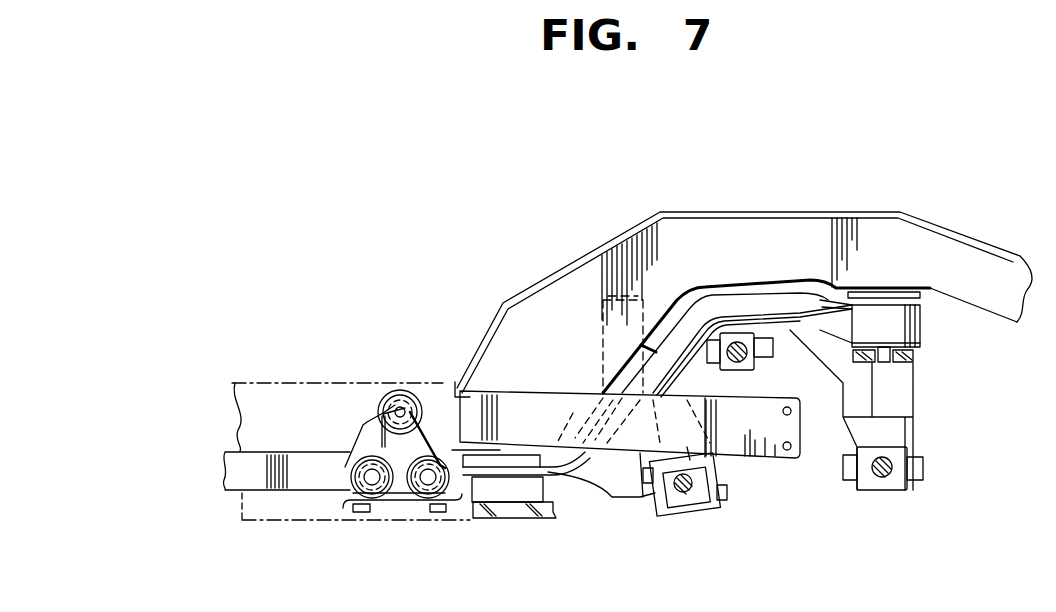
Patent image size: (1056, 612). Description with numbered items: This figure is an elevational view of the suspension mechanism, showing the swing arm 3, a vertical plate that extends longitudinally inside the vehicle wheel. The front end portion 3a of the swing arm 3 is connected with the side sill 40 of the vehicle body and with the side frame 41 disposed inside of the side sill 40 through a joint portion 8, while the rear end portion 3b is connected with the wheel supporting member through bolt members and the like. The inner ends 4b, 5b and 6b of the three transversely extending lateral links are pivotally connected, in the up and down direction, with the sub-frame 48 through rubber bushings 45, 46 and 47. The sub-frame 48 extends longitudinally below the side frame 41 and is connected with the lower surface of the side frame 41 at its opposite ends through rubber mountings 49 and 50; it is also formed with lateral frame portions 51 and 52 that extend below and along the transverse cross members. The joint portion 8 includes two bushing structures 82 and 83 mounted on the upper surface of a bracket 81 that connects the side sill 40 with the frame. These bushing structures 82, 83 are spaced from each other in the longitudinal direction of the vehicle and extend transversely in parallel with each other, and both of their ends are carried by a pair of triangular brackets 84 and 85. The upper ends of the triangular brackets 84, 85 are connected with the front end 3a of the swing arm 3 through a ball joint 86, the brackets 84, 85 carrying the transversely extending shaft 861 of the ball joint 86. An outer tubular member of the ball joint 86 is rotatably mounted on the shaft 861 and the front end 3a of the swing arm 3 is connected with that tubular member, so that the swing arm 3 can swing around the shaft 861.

The swing arm 3 is at (537, 398).
The front end portion 3a is at (457, 392).
The rear end portion 3b is at (768, 460).
The inner end 4b is at (736, 343).
The inner end 5b is at (687, 492).
The inner end 6b is at (882, 478).
The joint portion 8 is at (365, 442).
The side sill 40 is at (256, 382).
The side frame 41 is at (258, 492).
The rubber bushing 45 is at (753, 323).
The rubber bushing 46 is at (662, 510).
The rubber bushing 47 is at (870, 485).
The sub-frame 48 is at (703, 307).
The rubber mounting 49 is at (497, 525).
The rubber mounting 50 is at (938, 326).
The lateral frame portion 51 is at (583, 323).
The lateral frame portion 52 is at (917, 395).
The bracket 81 is at (372, 516).
The bushing structure 82 is at (343, 482).
The bushing structure 83 is at (453, 513).
The triangular bracket 84 is at (352, 437).
The triangular bracket 85 is at (355, 430).
The ball joint 86 is at (387, 390).
The shaft 861 is at (401, 402).